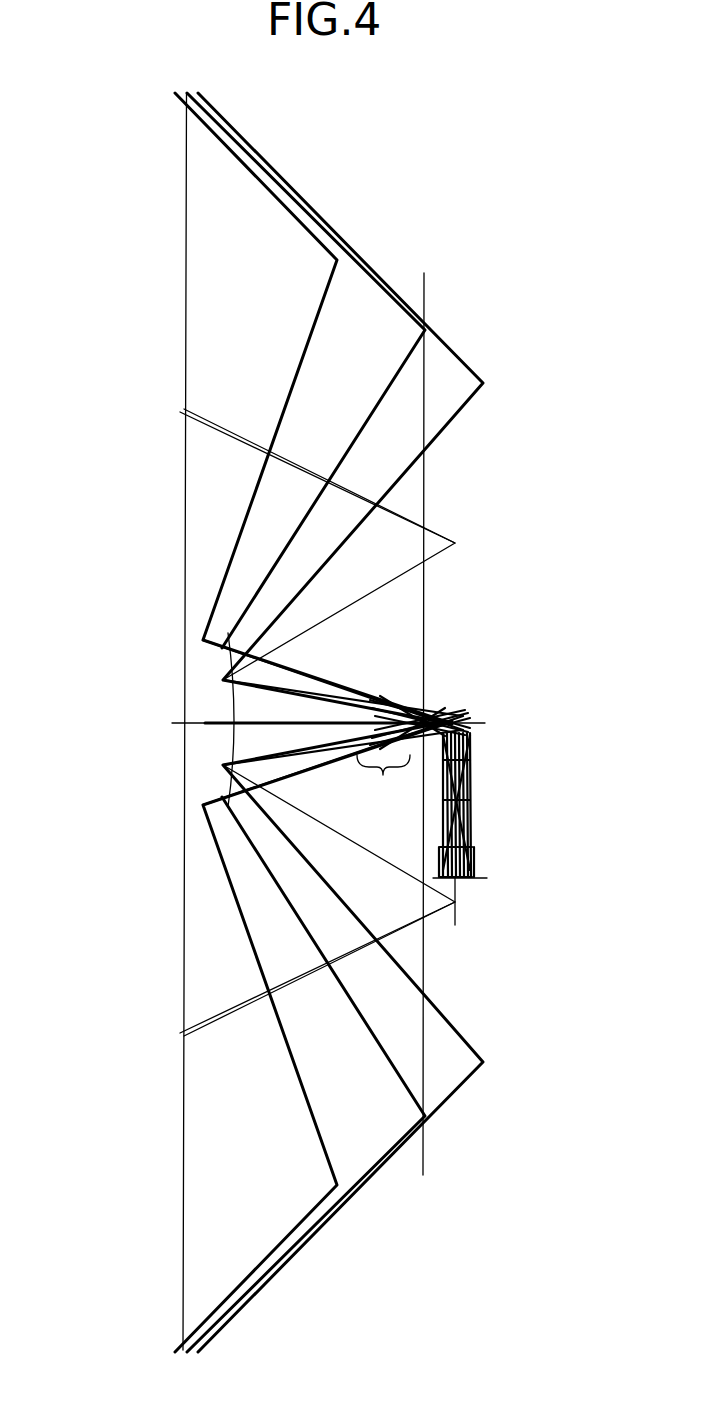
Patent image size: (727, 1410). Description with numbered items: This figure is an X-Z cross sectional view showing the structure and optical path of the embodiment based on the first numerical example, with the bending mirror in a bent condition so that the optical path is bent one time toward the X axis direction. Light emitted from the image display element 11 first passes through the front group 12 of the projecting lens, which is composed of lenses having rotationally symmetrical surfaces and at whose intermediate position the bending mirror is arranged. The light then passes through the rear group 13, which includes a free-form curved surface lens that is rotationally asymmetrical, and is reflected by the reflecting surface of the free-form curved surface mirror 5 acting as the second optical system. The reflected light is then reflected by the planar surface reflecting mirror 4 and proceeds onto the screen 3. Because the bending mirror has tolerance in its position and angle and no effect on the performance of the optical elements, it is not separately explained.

The screen 3 is at (186, 473).
The planar surface reflecting mirror 4 is at (425, 653).
The free-form curved surface mirror 5 is at (233, 741).
The image display element 11 is at (467, 881).
The front group 12 is at (480, 703).
The rear group 13 is at (383, 791).